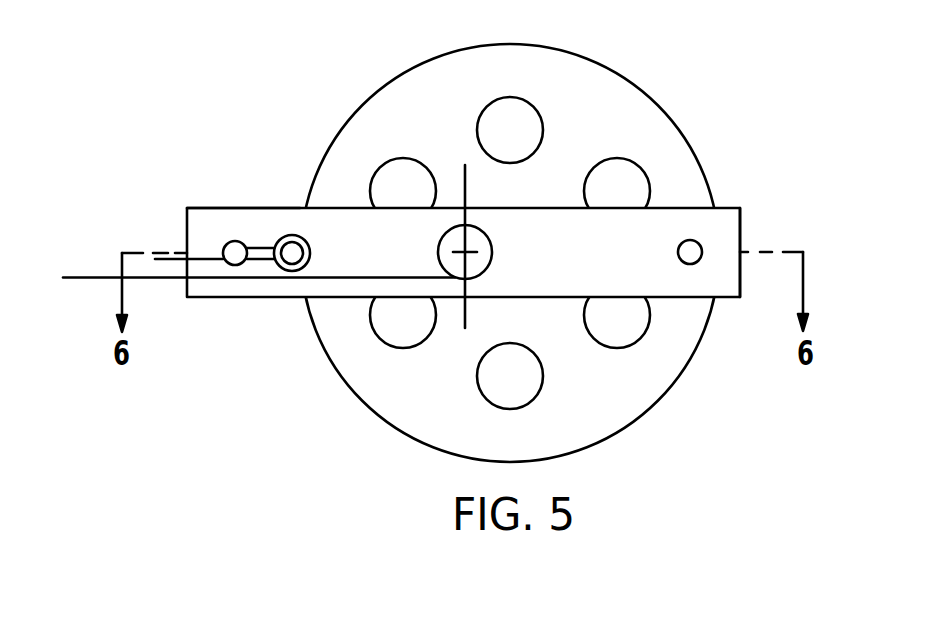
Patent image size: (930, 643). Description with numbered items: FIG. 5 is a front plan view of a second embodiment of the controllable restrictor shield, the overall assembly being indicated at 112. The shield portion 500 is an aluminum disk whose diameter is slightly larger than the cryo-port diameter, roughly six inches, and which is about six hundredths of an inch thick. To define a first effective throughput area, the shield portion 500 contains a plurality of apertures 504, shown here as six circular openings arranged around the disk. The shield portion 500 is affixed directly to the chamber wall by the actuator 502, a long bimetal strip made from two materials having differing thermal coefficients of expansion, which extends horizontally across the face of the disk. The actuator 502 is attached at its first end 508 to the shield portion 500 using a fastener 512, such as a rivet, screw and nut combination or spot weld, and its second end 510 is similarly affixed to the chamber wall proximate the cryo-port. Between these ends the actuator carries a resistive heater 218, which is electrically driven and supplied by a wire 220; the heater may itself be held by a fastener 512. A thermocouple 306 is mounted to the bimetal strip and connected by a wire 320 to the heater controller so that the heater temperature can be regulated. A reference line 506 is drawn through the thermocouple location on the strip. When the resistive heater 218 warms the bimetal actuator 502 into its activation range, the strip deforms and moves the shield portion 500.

The apparatus 112 is at (657, 73).
The shield portion 500 is at (402, 86).
The apertures 504 is at (528, 98).
The actuator 502 is at (291, 208).
The second end 510 is at (195, 208).
The first end 508 is at (730, 283).
The axis line 506 is at (467, 191).
The thermocouple 306 is at (453, 228).
The wire 320 is at (335, 278).
The wire 220 is at (170, 257).
The resistive heater 218 is at (279, 238).
The fastener 512 is at (237, 265).